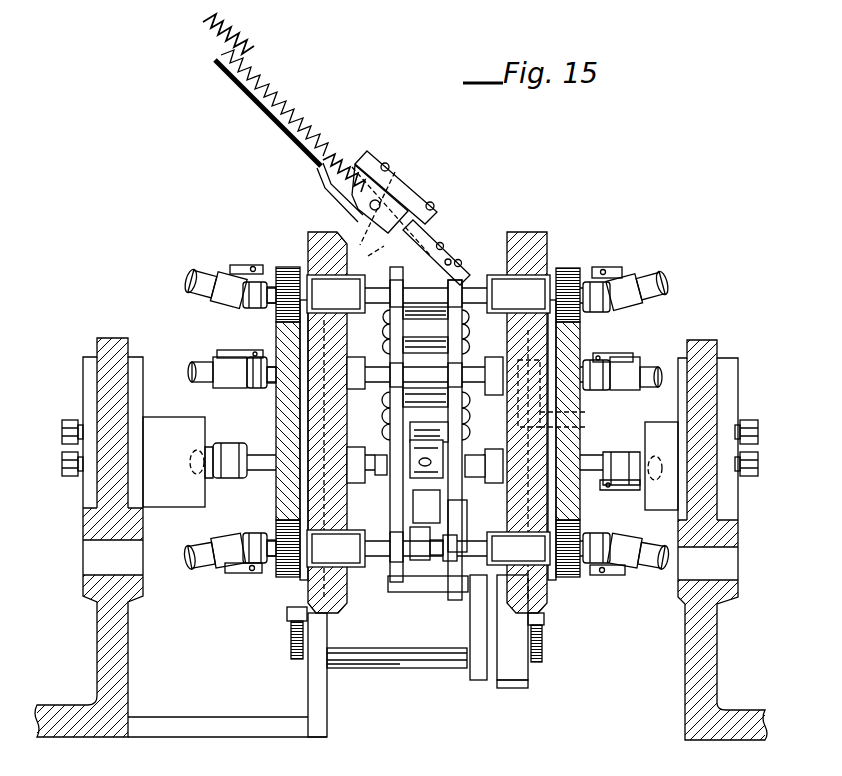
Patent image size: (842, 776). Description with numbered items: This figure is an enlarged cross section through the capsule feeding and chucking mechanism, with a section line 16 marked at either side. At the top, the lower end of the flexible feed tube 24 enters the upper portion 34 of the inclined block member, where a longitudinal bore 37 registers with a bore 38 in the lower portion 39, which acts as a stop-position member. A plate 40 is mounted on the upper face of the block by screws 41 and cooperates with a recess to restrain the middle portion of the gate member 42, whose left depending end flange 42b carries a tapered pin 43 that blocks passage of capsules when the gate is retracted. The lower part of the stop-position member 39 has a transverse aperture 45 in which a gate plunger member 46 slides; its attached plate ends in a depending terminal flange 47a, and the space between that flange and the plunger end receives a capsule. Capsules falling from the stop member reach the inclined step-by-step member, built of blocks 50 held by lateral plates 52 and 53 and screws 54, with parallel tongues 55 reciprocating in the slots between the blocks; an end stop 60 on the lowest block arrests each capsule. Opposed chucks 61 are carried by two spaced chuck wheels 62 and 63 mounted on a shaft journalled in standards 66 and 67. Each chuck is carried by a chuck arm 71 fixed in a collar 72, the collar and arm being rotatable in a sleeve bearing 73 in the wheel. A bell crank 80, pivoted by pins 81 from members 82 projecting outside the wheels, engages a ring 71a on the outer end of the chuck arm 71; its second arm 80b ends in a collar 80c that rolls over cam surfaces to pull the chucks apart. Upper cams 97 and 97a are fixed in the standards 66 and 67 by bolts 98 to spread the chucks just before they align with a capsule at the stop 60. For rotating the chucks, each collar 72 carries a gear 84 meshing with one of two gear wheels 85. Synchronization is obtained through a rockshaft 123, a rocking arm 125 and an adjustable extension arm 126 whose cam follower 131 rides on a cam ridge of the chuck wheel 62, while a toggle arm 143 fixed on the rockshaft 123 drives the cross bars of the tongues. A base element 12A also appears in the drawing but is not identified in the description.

The section line 16- 16 is at (68, 230).
The flexible feed tube 24 is at (232, 42).
The upper portion of inclined block member 34 is at (362, 165).
The longitudinal bore 37 is at (347, 243).
The bore 38 is at (367, 258).
The stop-position member 39 is at (440, 225).
The plate 40 is at (400, 181).
The screws 41 is at (436, 204).
The gate member 42 is at (348, 203).
The left depending end flange 42b is at (386, 182).
The tapered pin 43 is at (368, 208).
The transverse aperture 45 is at (430, 246).
The gate plunger member 46 is at (455, 262).
The depending terminal flange 47a is at (437, 259).
The blocks 50 is at (468, 320).
The lateral plate 52 is at (390, 433).
The lateral plate 53 is at (468, 421).
The screws 54 is at (390, 410).
The tongues 55 is at (394, 318).
The end stop 60 is at (440, 453).
The chucks 61 is at (455, 563).
The chuck wheel 62 is at (548, 600).
The chuck wheel 63 is at (347, 600).
The standard 66 is at (704, 650).
The standard 67 is at (98, 645).
The chuck arm 71 is at (476, 290).
The ring 71a is at (598, 306).
The collar 72 is at (392, 530).
The sleeve bearing 73 is at (530, 300).
The bell crank 80 is at (628, 312).
The second crank arm 80b is at (628, 278).
The collar 80c is at (664, 290).
The pins 81 is at (603, 268).
The members 82 is at (592, 270).
The gear 84 is at (566, 272).
The gear wheel 85 is at (288, 484).
The upper cam 97 is at (672, 447).
The upper cam 97a is at (190, 447).
The bolts 98 is at (62, 462).
The rockshaft 123 is at (545, 650).
The rocking arm 125 is at (513, 687).
The extension arm 126 is at (582, 427).
The cam follower 131 is at (571, 393).
The toggle arm 143 is at (478, 680).
The base 12A is at (392, 638).